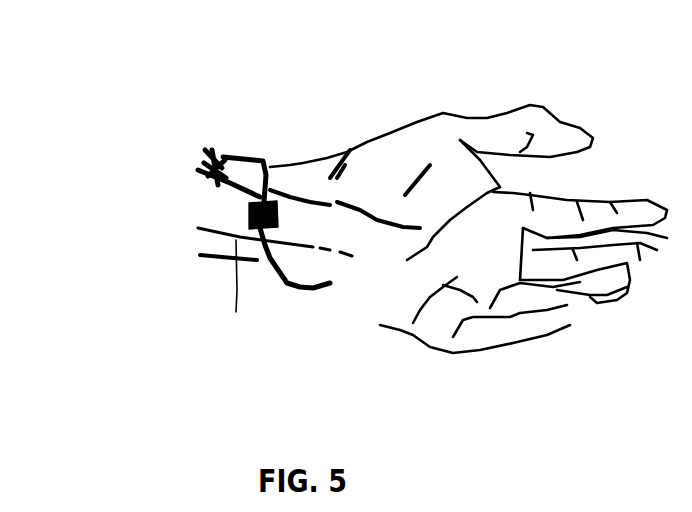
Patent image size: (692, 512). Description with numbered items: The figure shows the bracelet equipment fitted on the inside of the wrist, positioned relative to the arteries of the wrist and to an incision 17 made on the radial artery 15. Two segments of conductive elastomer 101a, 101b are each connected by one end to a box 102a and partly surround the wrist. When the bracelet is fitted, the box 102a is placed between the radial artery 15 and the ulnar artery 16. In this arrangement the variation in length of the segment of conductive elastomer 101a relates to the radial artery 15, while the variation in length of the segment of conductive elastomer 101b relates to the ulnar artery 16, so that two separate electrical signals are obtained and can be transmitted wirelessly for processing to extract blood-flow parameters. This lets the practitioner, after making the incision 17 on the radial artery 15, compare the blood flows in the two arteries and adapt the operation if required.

The radial artery 15 is at (432, 203).
The ulnar artery 16 is at (210, 322).
The incision 17 is at (229, 105).
The segment of conductive elastomer 101a is at (283, 114).
The segment of conductive elastomer 101b is at (293, 319).
The box 102a is at (146, 199).